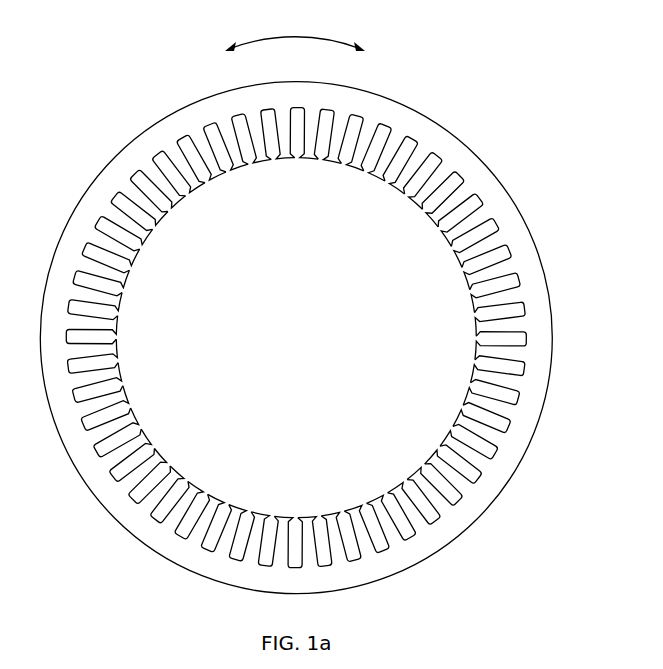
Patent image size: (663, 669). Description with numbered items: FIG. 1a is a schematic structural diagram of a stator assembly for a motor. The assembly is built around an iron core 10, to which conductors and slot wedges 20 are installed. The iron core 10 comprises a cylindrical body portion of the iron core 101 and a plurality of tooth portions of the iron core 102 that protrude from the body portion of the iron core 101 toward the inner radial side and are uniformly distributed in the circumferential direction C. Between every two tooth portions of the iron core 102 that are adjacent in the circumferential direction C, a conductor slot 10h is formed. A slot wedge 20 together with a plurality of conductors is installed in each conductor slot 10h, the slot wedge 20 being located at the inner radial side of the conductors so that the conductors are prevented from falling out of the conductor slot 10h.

The iron core 10 is at (292, 328).
The body portion of the iron core 101 is at (112, 178).
The tooth portions of the iron core 102 is at (229, 166).
The conductor slot 10h is at (235, 166).
The slot wedge 20 is at (229, 166).
The circumferential direction C is at (295, 29).